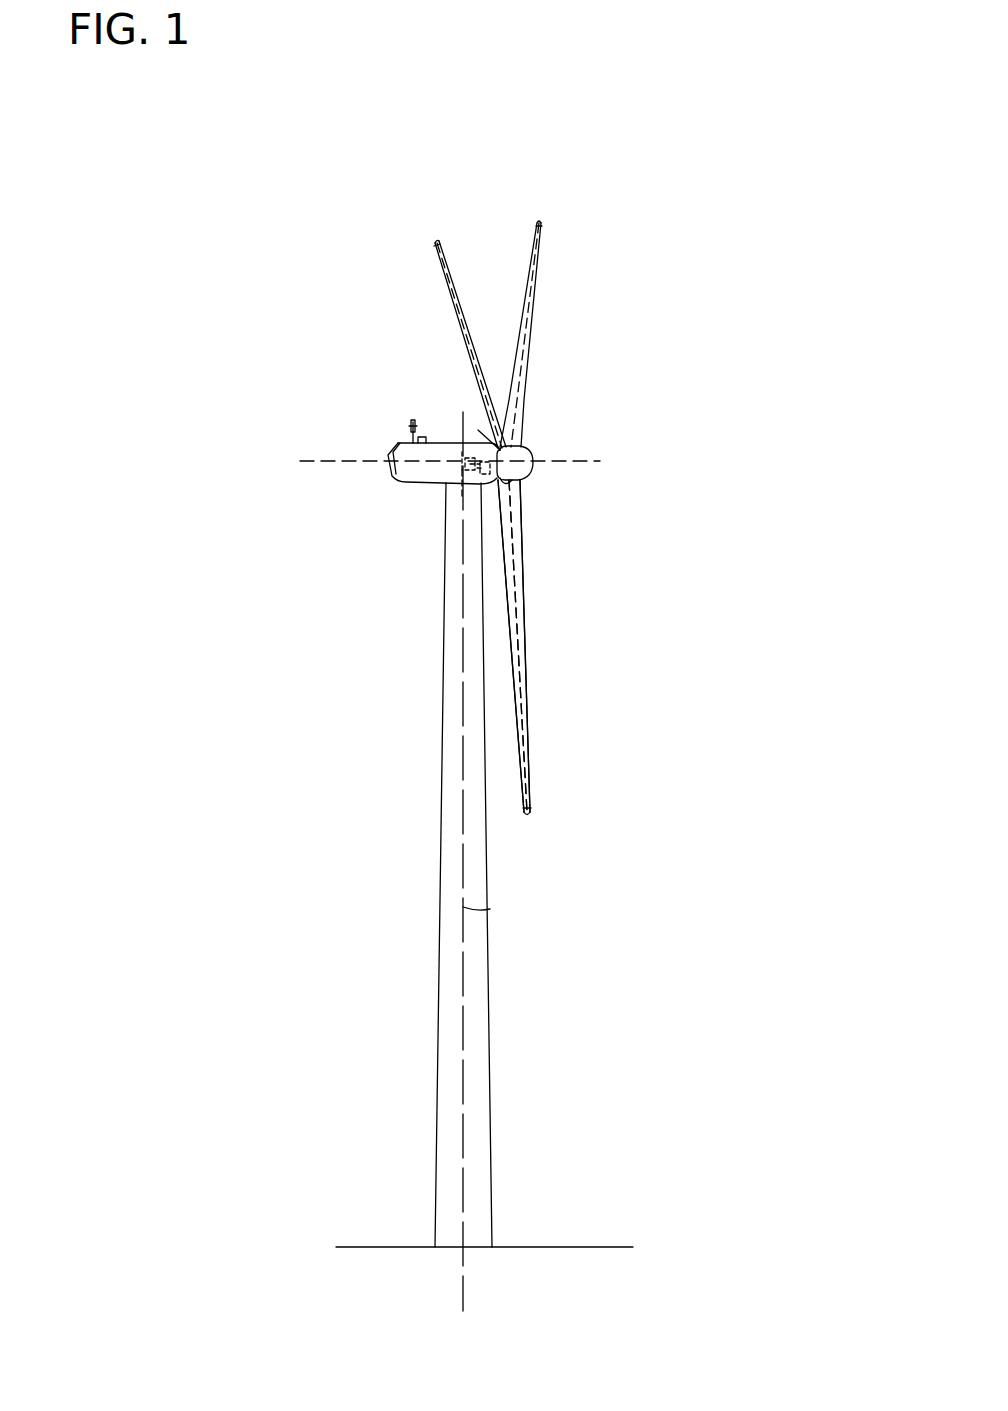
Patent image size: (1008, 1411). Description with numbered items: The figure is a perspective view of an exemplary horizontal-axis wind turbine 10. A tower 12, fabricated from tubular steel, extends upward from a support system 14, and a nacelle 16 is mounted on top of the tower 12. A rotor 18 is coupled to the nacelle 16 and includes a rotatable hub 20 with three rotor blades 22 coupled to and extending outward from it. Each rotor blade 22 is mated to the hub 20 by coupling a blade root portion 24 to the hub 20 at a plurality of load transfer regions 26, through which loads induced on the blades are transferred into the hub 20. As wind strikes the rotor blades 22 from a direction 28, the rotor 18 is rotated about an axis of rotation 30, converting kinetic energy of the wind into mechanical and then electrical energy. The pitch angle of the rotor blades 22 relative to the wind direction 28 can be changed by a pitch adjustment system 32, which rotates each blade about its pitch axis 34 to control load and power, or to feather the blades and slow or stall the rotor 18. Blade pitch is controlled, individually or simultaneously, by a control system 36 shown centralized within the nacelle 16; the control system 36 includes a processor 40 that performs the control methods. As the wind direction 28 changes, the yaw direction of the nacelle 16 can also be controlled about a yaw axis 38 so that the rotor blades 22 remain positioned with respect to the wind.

The wind turbine 10 is at (225, 256).
The tower 12 is at (446, 1025).
The support system 14 is at (393, 1247).
The nacelle 16 is at (420, 483).
The rotor 18 is at (538, 366).
The hub 20 is at (533, 458).
The rotor blade 22 is at (454, 309).
The blade root portion 24 is at (520, 566).
The load transfer region 26 is at (515, 480).
The direction 28 is at (762, 461).
The axis of rotation 30 is at (600, 462).
The pitch adjustment system 32 is at (495, 508).
The pitch axis 34 is at (432, 243).
The control system 36 is at (472, 478).
The yaw axis 38 is at (500, 903).
The processor 40 is at (478, 430).